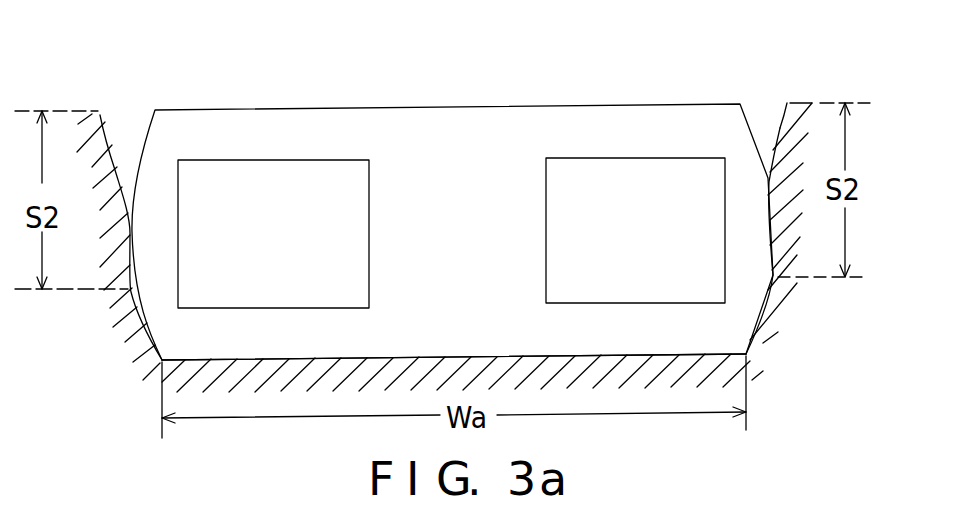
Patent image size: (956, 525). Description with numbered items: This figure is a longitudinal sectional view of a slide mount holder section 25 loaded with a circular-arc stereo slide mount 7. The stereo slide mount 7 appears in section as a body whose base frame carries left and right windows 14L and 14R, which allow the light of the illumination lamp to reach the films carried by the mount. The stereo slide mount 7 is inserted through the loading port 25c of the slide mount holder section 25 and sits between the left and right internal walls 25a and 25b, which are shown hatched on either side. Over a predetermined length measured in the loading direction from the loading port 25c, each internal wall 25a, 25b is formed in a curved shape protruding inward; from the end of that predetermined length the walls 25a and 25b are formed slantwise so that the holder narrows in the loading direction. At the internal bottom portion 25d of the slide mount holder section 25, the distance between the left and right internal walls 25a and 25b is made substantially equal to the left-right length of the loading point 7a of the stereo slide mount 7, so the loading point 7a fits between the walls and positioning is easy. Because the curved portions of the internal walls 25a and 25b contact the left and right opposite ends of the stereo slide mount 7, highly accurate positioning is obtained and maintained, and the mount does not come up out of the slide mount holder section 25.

The stereo slide mount 7 is at (438, 108).
The loading point of the stereo slide mount 7a is at (493, 357).
The left window 14L is at (278, 162).
The right window 14R is at (647, 158).
The slide mount holder section 25 is at (772, 122).
The left internal wall 25a is at (101, 120).
The right internal wall 25b is at (777, 147).
The loading port 25c is at (787, 103).
The internal bottom portion 25d is at (404, 357).